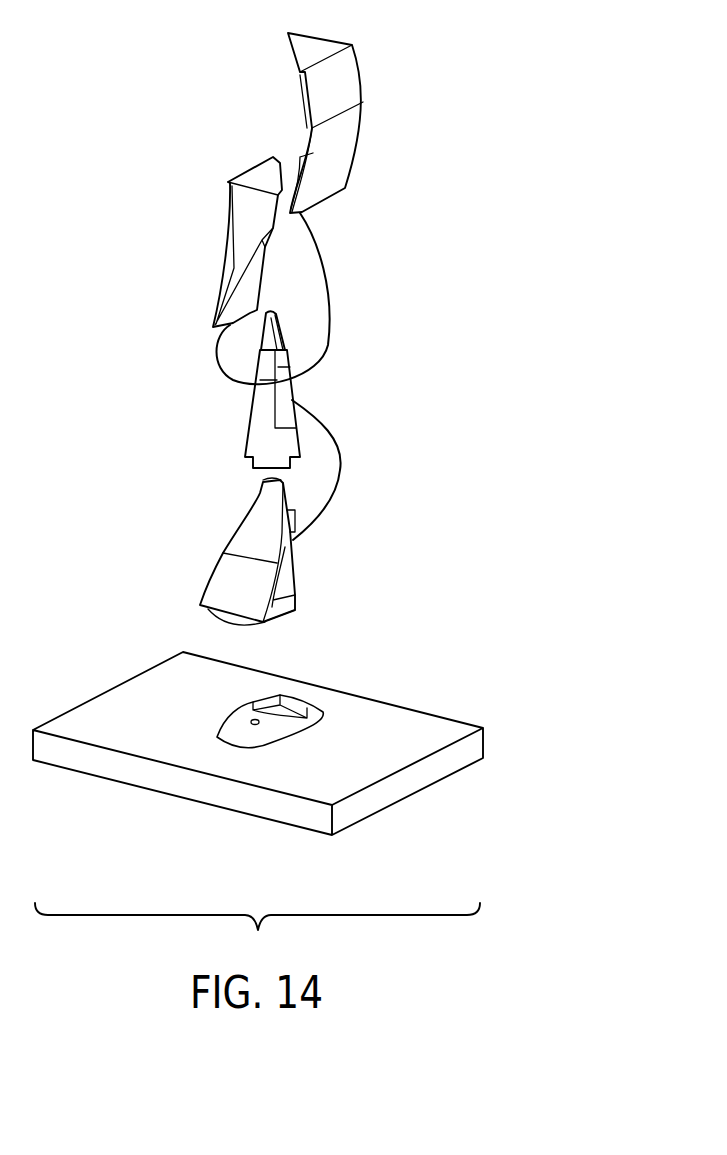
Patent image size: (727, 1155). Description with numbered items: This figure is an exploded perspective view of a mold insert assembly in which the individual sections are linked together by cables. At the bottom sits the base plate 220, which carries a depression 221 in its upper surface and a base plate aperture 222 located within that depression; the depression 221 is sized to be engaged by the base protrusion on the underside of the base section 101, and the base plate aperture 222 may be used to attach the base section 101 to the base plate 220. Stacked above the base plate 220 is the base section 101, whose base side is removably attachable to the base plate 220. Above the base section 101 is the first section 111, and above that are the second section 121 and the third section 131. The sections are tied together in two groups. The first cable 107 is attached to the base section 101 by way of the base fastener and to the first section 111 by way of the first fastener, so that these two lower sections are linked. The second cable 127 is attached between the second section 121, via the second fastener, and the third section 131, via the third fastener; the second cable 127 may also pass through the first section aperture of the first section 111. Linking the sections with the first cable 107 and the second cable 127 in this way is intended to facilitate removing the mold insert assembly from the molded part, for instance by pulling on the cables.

The second section 121 is at (352, 70).
The third section 131 is at (238, 205).
The second cable 127 is at (333, 287).
The first cable 107 is at (342, 458).
The first section 111 is at (255, 440).
The base section 101 is at (225, 563).
The base plate 220 is at (427, 720).
The depression 221 is at (225, 730).
The base plate aperture 222 is at (253, 722).